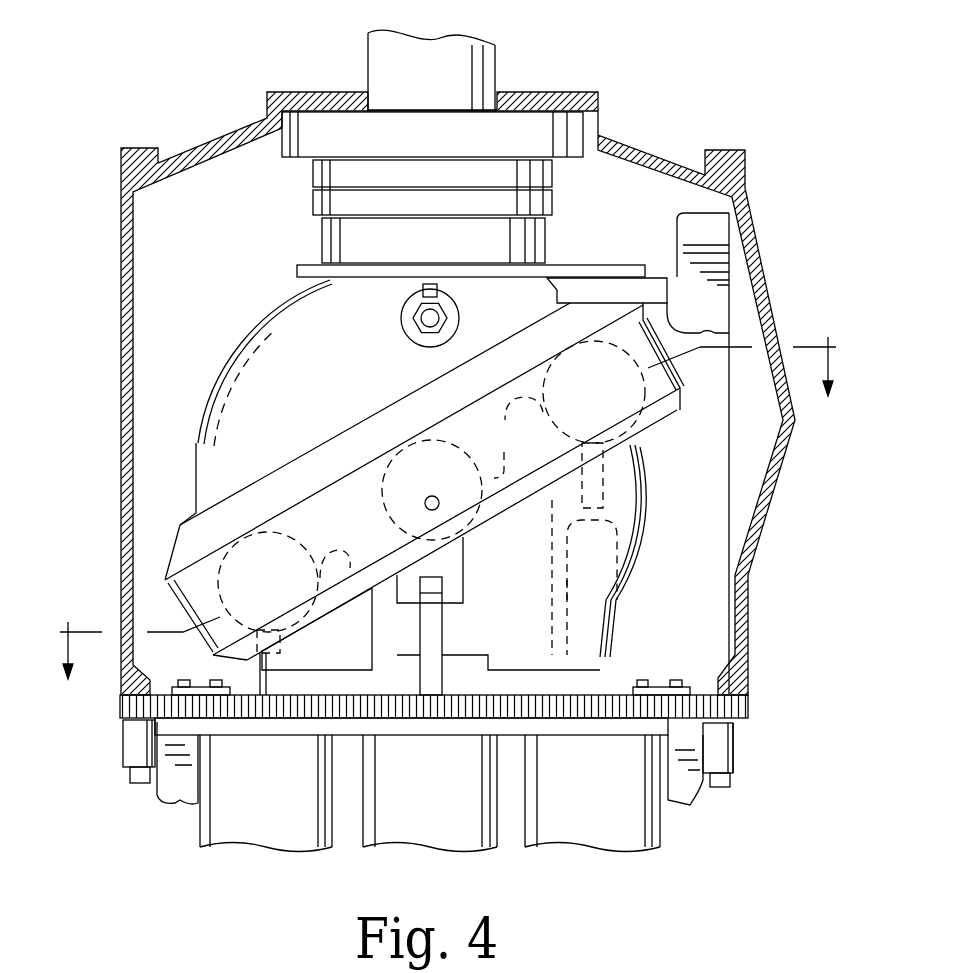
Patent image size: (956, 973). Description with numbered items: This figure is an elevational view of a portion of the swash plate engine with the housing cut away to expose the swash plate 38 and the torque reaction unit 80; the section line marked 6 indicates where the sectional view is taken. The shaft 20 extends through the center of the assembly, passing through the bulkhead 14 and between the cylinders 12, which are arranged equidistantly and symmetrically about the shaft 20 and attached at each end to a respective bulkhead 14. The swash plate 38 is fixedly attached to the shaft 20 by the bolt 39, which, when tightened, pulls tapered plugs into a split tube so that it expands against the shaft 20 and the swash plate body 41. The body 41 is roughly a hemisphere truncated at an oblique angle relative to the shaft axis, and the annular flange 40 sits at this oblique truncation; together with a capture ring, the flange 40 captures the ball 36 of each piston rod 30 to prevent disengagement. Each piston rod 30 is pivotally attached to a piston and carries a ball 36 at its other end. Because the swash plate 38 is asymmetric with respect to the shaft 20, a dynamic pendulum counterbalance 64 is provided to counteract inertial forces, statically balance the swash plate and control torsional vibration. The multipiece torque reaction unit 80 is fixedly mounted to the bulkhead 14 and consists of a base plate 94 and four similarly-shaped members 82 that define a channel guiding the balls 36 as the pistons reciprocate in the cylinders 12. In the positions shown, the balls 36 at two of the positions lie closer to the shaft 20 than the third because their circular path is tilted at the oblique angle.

The shaft 20 is at (497, 77).
The dynamic pendulum counterbalance 64 is at (690, 230).
The body 41 is at (252, 338).
The swash plate 38 is at (204, 409).
The bolt 39 is at (408, 344).
The annular flange 40 is at (163, 578).
The ball 36 is at (431, 487).
The members 82 is at (645, 492).
The torque reaction unit 80 is at (628, 572).
The piston rod 30 is at (443, 630).
The base plate 94 is at (398, 653).
The bulkhead 14 is at (117, 702).
The cylinders 12 is at (273, 820).
The section line 6- 6 is at (448, 493).